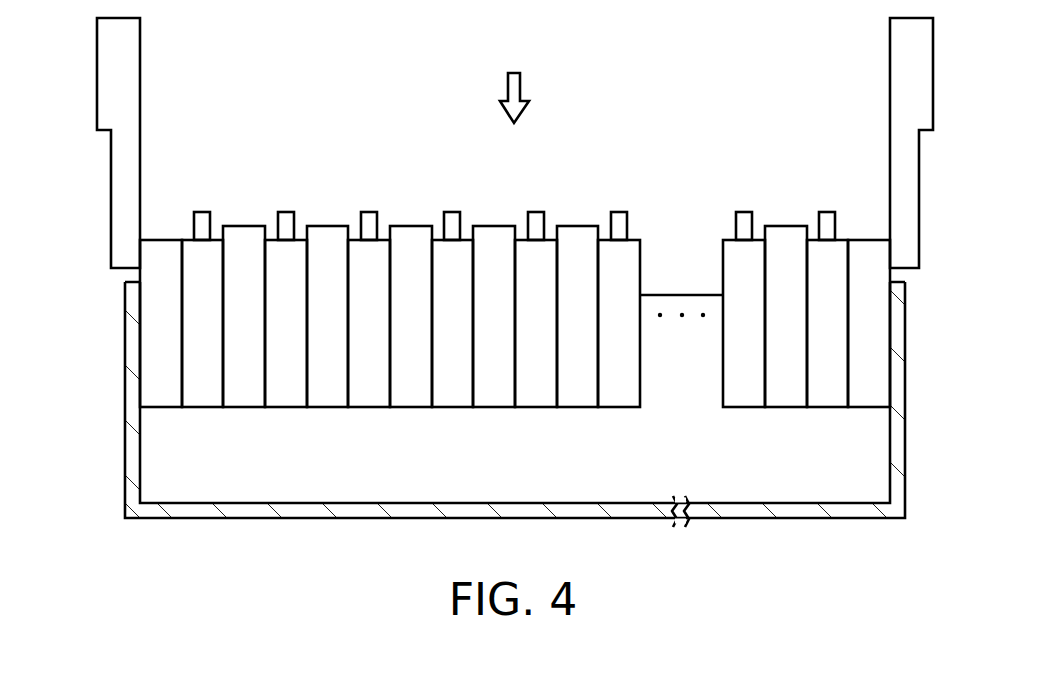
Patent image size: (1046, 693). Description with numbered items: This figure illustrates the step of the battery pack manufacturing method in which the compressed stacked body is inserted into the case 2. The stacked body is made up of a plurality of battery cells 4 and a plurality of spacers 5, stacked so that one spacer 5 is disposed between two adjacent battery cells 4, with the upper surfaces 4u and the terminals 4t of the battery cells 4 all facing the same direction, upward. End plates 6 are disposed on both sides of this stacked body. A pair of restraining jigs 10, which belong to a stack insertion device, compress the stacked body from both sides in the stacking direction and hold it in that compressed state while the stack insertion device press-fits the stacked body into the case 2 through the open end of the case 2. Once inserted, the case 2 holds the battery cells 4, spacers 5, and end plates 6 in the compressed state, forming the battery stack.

The case 2 is at (125, 432).
The battery cell 4 is at (199, 393).
The terminal 4t is at (202, 218).
The upper surface 4u is at (632, 238).
The spacer 5 is at (241, 393).
The end plate 6 is at (158, 393).
The restraining jig 10 is at (128, 70).